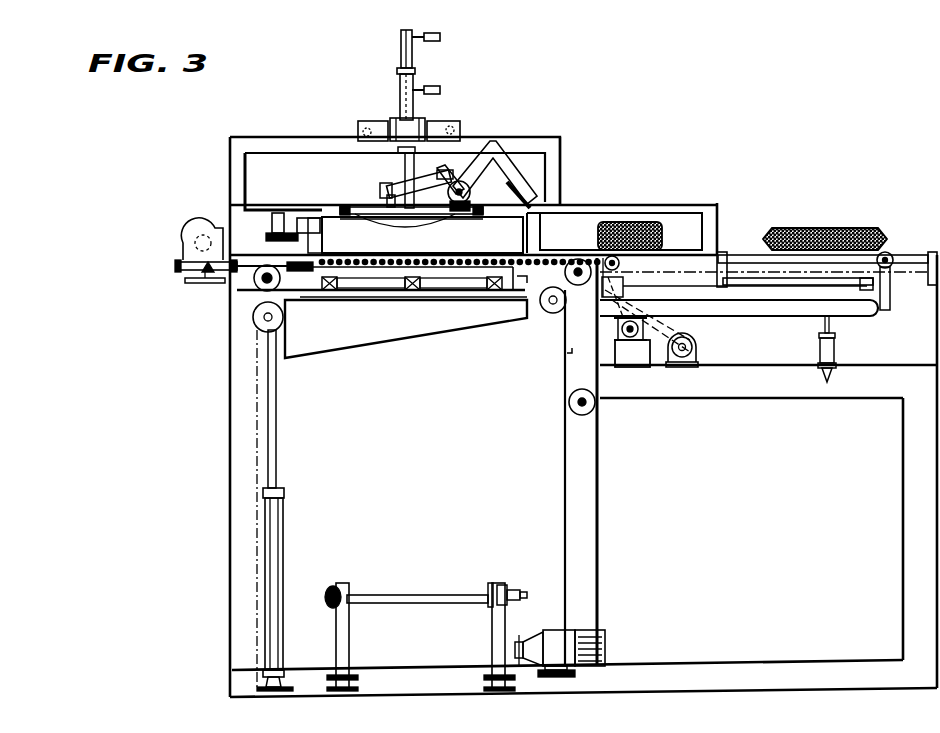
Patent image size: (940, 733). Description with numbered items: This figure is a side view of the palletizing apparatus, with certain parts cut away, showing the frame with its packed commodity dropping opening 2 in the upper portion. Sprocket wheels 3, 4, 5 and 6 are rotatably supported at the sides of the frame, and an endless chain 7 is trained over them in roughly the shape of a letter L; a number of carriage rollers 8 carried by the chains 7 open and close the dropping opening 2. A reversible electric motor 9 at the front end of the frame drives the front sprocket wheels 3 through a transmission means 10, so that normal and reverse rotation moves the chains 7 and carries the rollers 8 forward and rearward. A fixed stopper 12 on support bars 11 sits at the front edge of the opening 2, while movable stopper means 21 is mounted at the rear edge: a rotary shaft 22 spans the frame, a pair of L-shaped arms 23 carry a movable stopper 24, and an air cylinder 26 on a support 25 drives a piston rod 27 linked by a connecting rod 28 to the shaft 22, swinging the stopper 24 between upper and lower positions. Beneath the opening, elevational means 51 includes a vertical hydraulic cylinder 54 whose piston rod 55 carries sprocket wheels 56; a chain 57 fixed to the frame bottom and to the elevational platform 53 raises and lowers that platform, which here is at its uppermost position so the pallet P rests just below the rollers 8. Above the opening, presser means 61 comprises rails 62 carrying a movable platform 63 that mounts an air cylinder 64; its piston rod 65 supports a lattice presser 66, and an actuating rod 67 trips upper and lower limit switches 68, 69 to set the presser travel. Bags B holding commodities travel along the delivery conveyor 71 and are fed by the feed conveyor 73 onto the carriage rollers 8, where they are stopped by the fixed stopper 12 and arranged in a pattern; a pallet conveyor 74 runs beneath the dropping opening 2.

The packed commodity dropping opening 2 is at (522, 289).
The sprocket wheel 3 is at (255, 292).
The sprocket wheel 4 is at (582, 258).
The sprocket wheel 5 is at (577, 404).
The sprocket wheel 6 is at (547, 313).
The endless chain 7 is at (567, 353).
The carriage rollers 8 is at (371, 266).
The reversible electric motor 9 is at (187, 247).
The transmission means 10 is at (245, 280).
The support bars 11 is at (283, 231).
The fixed stopper 12 is at (308, 215).
The movable stopper means 21 is at (648, 169).
The rotary shaft 22 is at (343, 205).
The L-shaped arms 23 is at (533, 167).
The movable stopper 24 is at (535, 182).
The support 25 is at (385, 205).
The air cylinder 26 is at (394, 186).
The piston rod 27 is at (437, 173).
The connecting rod 28 is at (558, 136).
The elevational means 51 is at (260, 603).
The elevational platform 53 is at (437, 302).
The hydraulic cylinder 54 is at (270, 574).
The piston rod 55 is at (268, 452).
The sprocket wheels 56 is at (263, 330).
The chain 57 is at (262, 436).
The presser means 61 is at (398, 95).
The rail 62 is at (552, 142).
The movable platform 63 is at (430, 122).
The air cylinder 64 is at (397, 71).
The piston rod 65 is at (388, 153).
The presser 66 is at (322, 205).
The actuating rod 67 is at (399, 38).
The limit switch 68 is at (441, 37).
The limit switch 69 is at (441, 90).
The delivery conveyor 71 is at (905, 255).
The feed conveyor 73 is at (735, 250).
The pallet conveyor 74 is at (345, 590).
The bags B is at (635, 232).
The pallet P is at (400, 289).